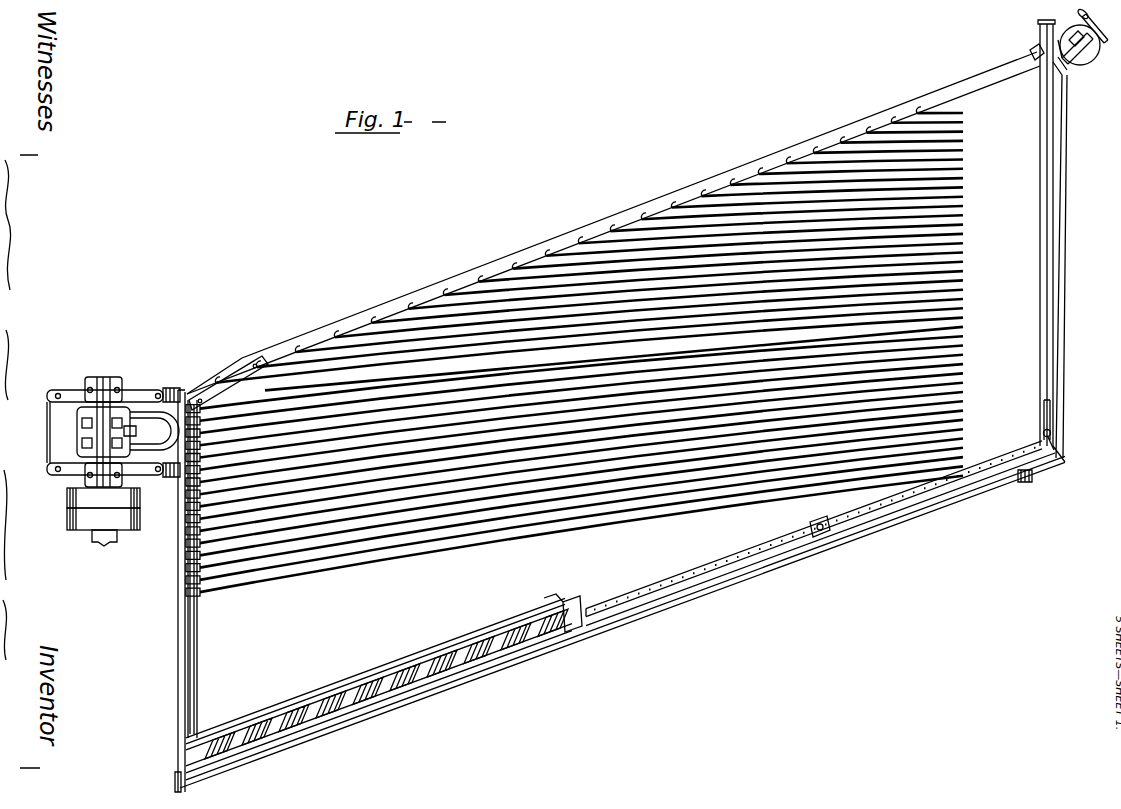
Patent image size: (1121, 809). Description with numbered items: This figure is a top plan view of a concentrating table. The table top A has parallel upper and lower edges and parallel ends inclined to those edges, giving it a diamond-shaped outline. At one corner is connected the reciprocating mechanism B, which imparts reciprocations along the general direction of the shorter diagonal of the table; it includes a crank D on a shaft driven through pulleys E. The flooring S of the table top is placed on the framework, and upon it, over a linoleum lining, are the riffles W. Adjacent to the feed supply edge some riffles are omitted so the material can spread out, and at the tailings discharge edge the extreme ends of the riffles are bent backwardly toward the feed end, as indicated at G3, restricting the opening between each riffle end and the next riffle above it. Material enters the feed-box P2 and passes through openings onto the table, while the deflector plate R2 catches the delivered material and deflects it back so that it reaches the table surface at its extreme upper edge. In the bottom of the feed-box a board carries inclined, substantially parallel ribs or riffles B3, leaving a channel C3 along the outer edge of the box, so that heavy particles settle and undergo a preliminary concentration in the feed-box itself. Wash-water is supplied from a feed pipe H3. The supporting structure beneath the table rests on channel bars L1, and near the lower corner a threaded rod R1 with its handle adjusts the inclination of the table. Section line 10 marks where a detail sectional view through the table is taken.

The table top A is at (621, 406).
The riffles W is at (964, 194).
The bent riffle ends G3 is at (415, 312).
The channel bars L1 is at (182, 393).
The reciprocating mechanism B is at (92, 432).
The crank D is at (96, 410).
The pulleys E is at (75, 515).
The feed-box P2 is at (343, 716).
The ribs or riffles of the feed-box B3 is at (372, 690).
The channel or groove C3 is at (525, 642).
The deflector plate R2 is at (520, 628).
The feed pipe H3 is at (743, 560).
The section line 10 is at (594, 646).
The threaded rod R1 is at (1072, 70).
The flooring of the table top S is at (1098, 33).